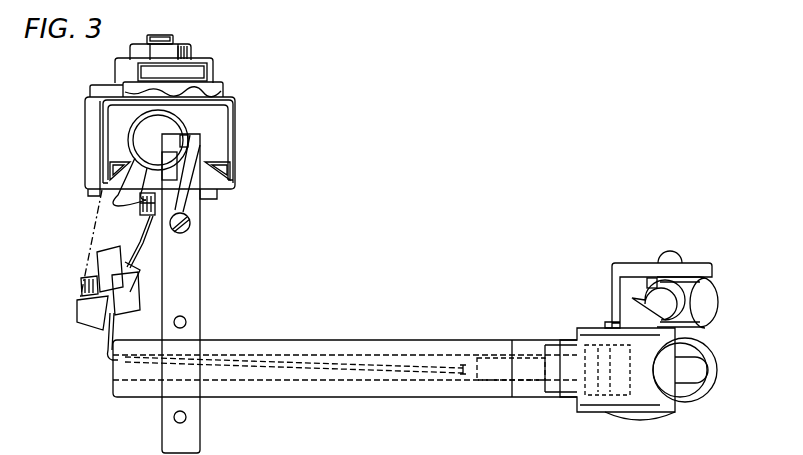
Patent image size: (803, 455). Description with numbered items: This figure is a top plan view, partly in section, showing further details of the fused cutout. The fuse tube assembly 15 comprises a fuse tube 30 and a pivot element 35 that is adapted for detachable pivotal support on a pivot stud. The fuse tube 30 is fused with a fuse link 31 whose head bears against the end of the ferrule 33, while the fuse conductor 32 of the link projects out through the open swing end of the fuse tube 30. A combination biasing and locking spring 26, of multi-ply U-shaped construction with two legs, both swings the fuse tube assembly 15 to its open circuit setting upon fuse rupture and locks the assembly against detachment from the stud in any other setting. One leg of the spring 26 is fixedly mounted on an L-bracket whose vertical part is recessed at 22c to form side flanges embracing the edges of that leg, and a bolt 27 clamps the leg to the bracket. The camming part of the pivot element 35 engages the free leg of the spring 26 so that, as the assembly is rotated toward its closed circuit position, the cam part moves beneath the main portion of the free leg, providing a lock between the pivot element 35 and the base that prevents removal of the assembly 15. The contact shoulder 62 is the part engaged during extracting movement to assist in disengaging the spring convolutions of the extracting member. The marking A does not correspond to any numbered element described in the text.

The tube 15 is at (417, 336).
The mounting bar 30 is at (338, 399).
The inner fitting 31 is at (495, 354).
The rod 32 is at (336, 362).
The end collar 33 is at (537, 400).
The swivel block 35 is at (678, 415).
The cylinder 26 is at (708, 308).
The bracket 22c is at (690, 275).
The knob 27 is at (672, 235).
The ring clip 62 is at (118, 196).
The cable assembly A is at (90, 244).